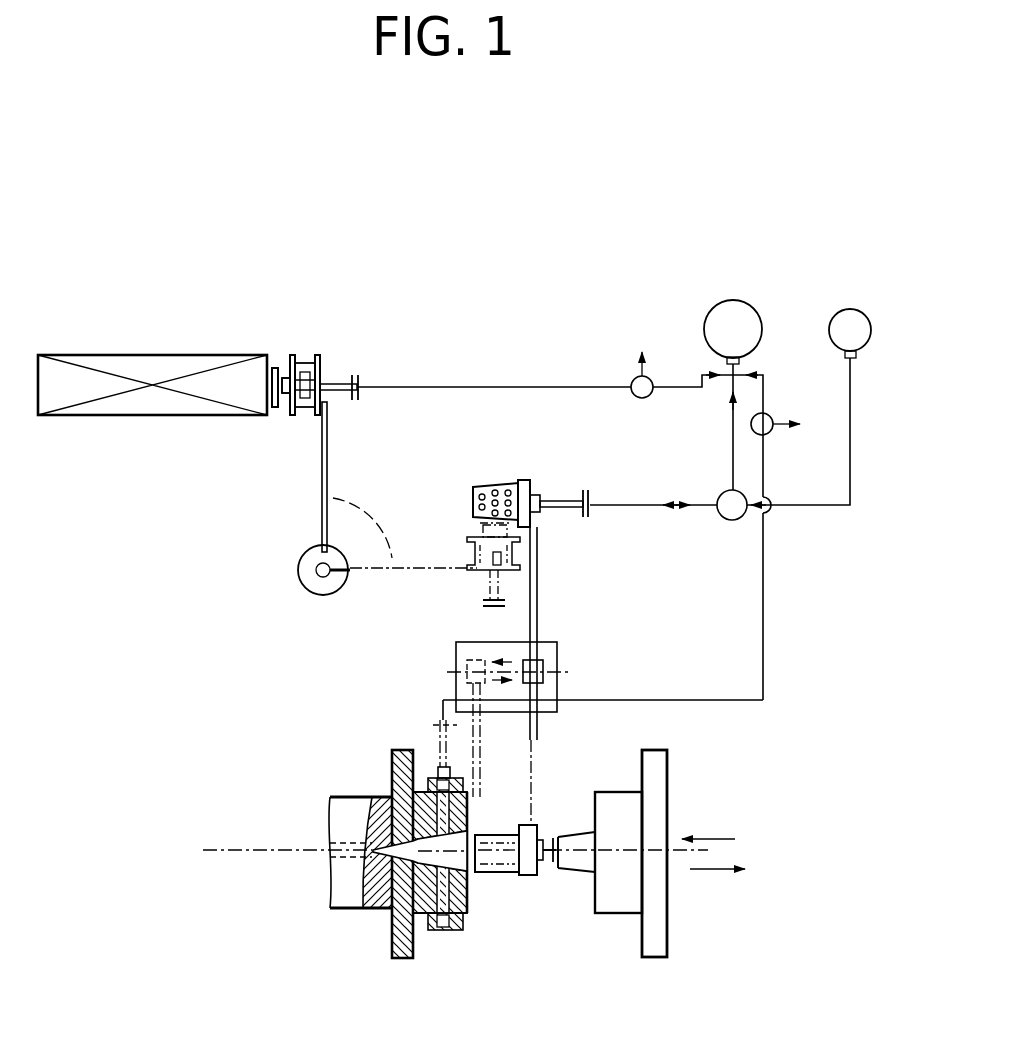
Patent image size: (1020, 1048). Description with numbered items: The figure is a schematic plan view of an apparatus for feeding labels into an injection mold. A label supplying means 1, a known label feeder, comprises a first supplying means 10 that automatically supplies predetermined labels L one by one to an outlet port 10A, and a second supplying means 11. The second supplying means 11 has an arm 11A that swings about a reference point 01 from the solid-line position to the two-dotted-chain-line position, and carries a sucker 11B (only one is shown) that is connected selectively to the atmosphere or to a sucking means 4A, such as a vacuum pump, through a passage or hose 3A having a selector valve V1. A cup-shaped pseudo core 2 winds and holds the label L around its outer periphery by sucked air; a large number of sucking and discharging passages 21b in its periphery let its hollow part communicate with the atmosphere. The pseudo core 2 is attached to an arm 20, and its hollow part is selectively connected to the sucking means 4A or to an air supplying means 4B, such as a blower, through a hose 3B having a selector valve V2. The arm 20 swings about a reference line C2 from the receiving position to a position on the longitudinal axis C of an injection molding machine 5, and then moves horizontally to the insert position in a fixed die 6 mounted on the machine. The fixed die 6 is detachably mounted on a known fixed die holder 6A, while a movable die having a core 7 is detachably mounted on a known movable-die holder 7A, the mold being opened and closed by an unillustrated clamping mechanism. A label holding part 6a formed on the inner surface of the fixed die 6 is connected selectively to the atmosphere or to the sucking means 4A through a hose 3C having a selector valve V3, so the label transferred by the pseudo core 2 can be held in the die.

The label supplying means 1 is at (268, 422).
The first supplying means 10 is at (145, 350).
The outlet port 10A is at (271, 364).
The second supplying means 11 is at (305, 352).
The arm 11A is at (332, 470).
The sucker 11B is at (284, 415).
The reference point 01 is at (308, 588).
The pseudo core 2 is at (474, 487).
The sucking and discharging passages 21b is at (497, 488).
The arm 20 is at (540, 567).
The passage (hose) 3A is at (505, 385).
The passage (hose) 3B is at (637, 510).
The passage (hose) 3C is at (768, 691).
The sucking means 4A is at (745, 301).
The air supplying means 4B is at (858, 311).
The selector valve V1 is at (642, 399).
The selector valve V2 is at (732, 521).
The selector valve V3 is at (770, 434).
The reference line C2 is at (568, 668).
The injection molding machine 5 is at (352, 912).
The fixed die 6 is at (468, 913).
The label holding part 6a is at (461, 838).
The fixed die holder 6A is at (400, 959).
The core 7 is at (572, 871).
The movable-die holder 7A is at (653, 957).
The longitudinal axis C is at (265, 850).
The label L is at (270, 366).